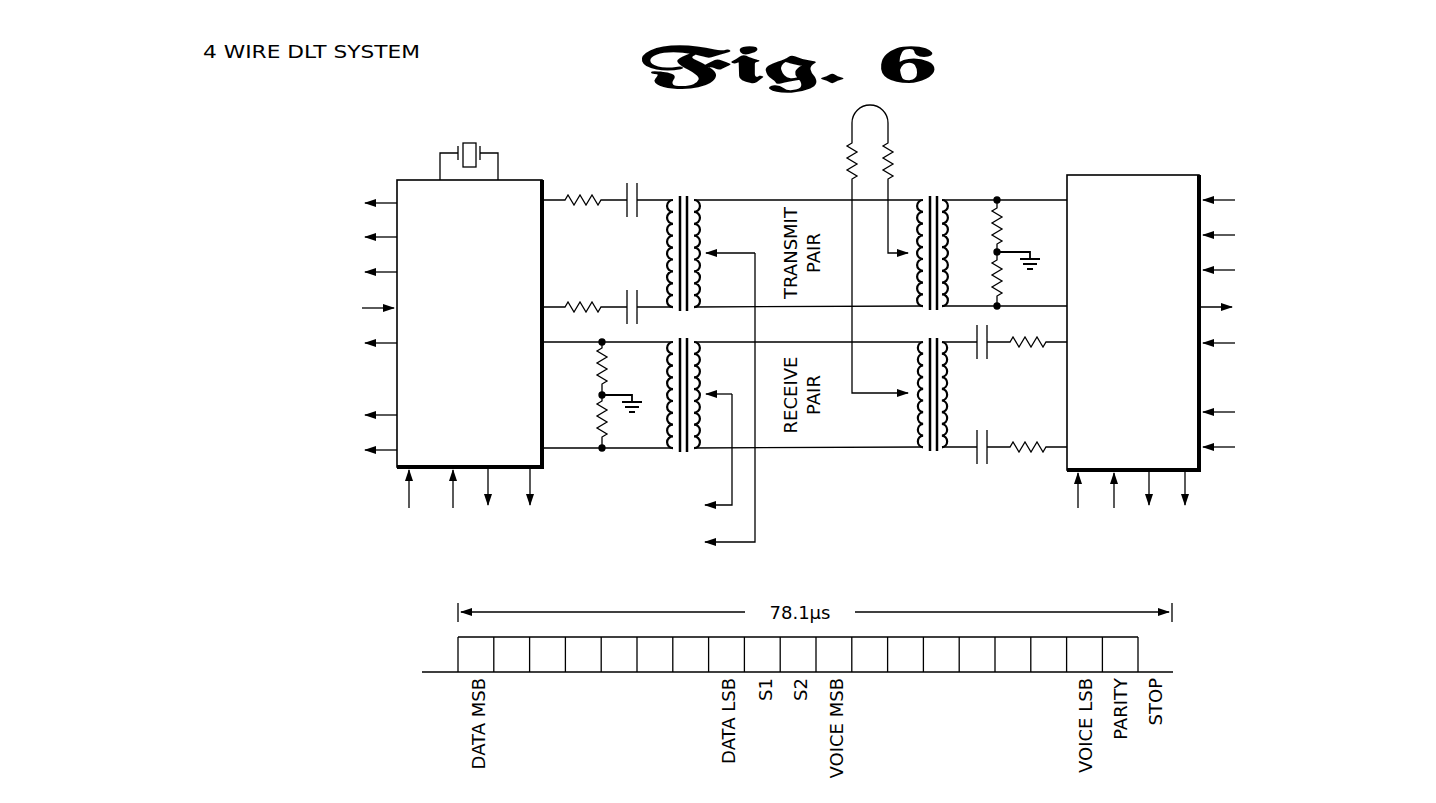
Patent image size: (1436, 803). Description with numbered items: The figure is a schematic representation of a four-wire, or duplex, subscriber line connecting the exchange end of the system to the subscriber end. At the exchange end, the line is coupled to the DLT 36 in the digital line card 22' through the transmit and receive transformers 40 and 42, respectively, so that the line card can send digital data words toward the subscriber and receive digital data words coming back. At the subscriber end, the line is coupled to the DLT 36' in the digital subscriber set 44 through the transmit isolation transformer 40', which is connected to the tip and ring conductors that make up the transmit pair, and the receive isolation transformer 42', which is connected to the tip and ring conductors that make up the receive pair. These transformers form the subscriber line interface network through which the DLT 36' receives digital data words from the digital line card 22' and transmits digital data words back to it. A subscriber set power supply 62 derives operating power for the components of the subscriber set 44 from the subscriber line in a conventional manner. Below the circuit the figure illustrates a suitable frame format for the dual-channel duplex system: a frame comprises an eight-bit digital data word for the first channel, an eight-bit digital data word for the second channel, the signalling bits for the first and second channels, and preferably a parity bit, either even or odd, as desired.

The digital loop transceiver 36' is at (379, 350).
The digital subscriber set 44 is at (740, 190).
The transmit isolation transformer 40' is at (638, 242).
The receive isolation transformer 42' is at (690, 413).
The subscriber set power supply 62 is at (661, 417).
The digital line card 22' is at (973, 278).
The receive transformer 42 is at (992, 236).
The digital loop transceiver 36 is at (1190, 367).
The transmit transformer 40 is at (946, 429).